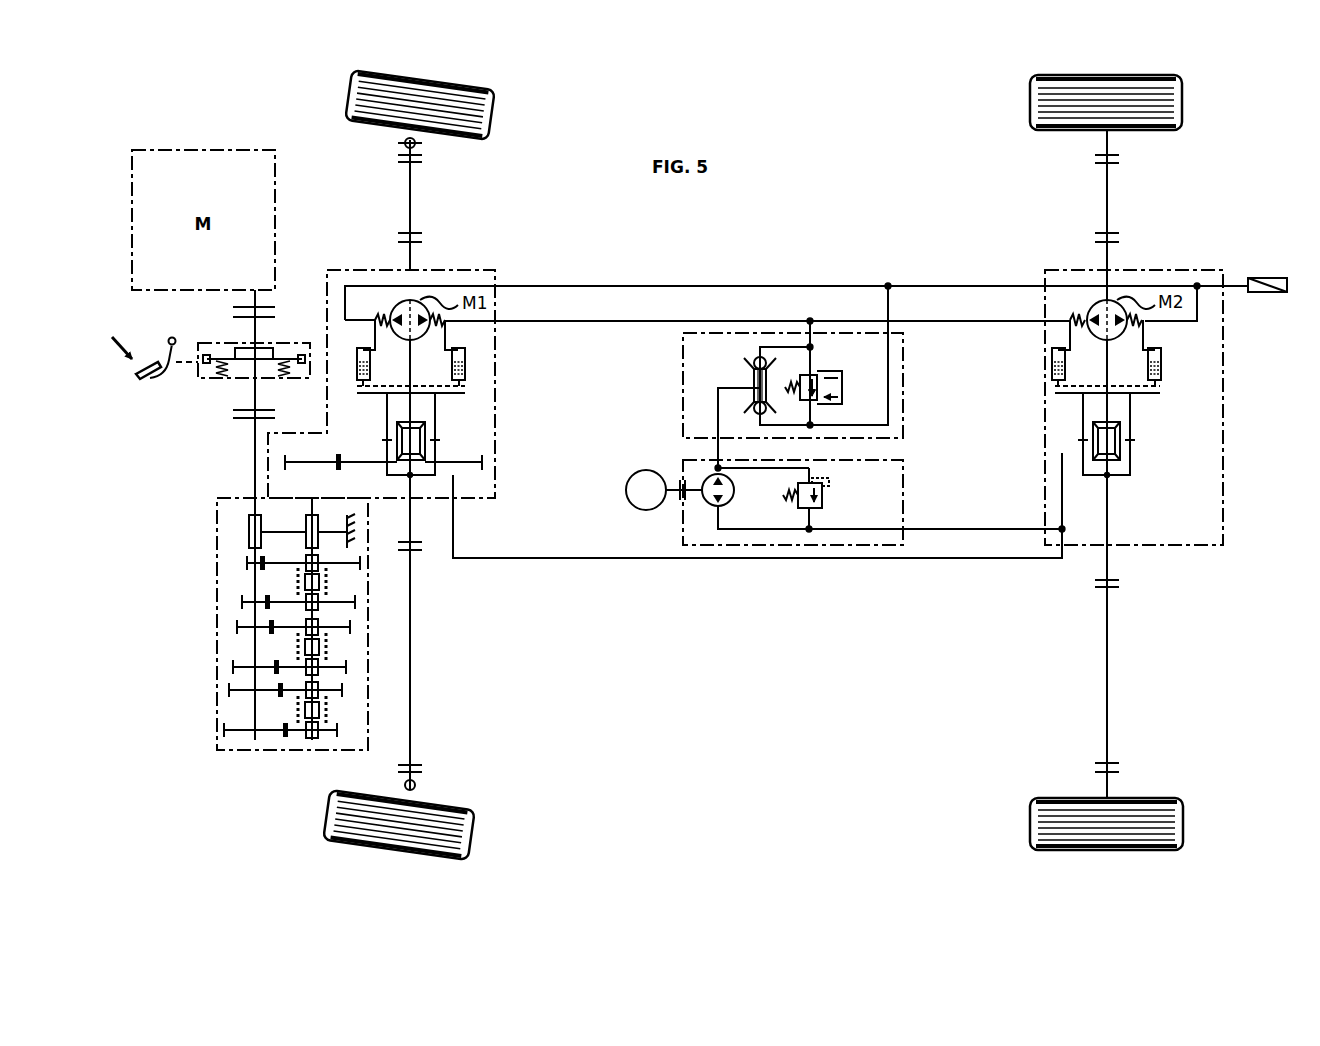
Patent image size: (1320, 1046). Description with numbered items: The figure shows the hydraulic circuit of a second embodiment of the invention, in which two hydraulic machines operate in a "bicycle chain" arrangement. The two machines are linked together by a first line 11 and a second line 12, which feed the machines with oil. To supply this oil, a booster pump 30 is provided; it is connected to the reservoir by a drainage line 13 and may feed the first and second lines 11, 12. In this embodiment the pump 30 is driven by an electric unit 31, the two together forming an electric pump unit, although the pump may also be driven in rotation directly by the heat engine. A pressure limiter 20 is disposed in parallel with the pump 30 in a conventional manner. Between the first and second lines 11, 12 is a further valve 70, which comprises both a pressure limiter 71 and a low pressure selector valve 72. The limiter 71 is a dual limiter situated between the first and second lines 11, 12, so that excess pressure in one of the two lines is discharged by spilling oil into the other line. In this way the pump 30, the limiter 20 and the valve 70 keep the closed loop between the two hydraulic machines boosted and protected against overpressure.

The first line 11 is at (600, 322).
The second line 12 is at (601, 285).
The drainage line 13 is at (720, 560).
The pressure limiter 20 is at (822, 500).
The booster pump 30 is at (735, 493).
The electric unit 31 is at (626, 490).
The valve 70 is at (908, 390).
The pressure limiter 71 is at (848, 388).
The low pressure selector valve 72 is at (743, 376).